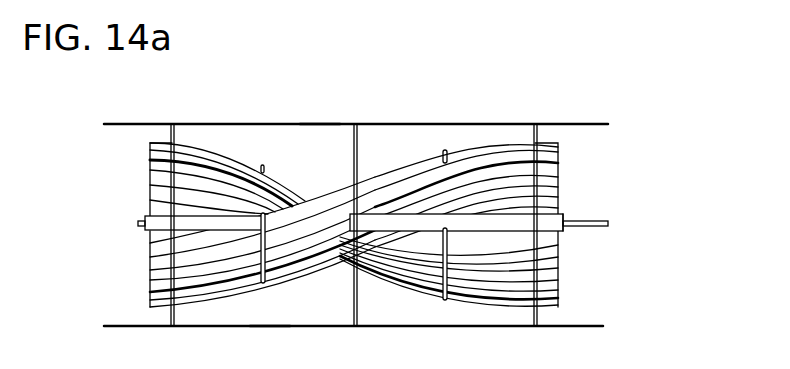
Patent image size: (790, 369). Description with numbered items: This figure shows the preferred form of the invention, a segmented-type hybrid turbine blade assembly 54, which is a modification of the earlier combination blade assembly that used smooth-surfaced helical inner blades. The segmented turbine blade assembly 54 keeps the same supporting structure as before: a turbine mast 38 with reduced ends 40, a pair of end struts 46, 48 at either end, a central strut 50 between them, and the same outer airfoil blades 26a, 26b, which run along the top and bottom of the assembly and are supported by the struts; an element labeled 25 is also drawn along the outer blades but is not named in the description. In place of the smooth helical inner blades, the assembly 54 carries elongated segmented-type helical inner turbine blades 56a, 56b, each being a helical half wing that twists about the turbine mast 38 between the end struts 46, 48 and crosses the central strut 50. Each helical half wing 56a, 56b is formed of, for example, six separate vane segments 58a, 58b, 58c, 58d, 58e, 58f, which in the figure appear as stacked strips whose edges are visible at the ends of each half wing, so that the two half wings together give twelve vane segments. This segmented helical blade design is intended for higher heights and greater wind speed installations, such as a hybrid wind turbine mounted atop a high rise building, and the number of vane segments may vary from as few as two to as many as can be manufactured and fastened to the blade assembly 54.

The frame rail 25 is at (105, 125).
The outer airfoil blade 26a is at (318, 121).
The outer airfoil blade 26b is at (272, 327).
The turbine mast 38 is at (563, 228).
The reduced ends 40 is at (138, 224).
The end strut 46 is at (539, 127).
The end strut 48 is at (172, 132).
The central strut 50 is at (362, 123).
The segmented turbine blade assembly 54 is at (692, 88).
The segmented helical inner turbine blade 56a is at (147, 270).
The segmented helical inner turbine blade 56b is at (147, 180).
The vane segment 58a is at (558, 150).
The vane segment 58b is at (558, 159).
The vane segment 58c is at (557, 177).
The vane segment 58d is at (557, 190).
The vane segment 58e is at (558, 200).
The vane segment 58f is at (558, 210).